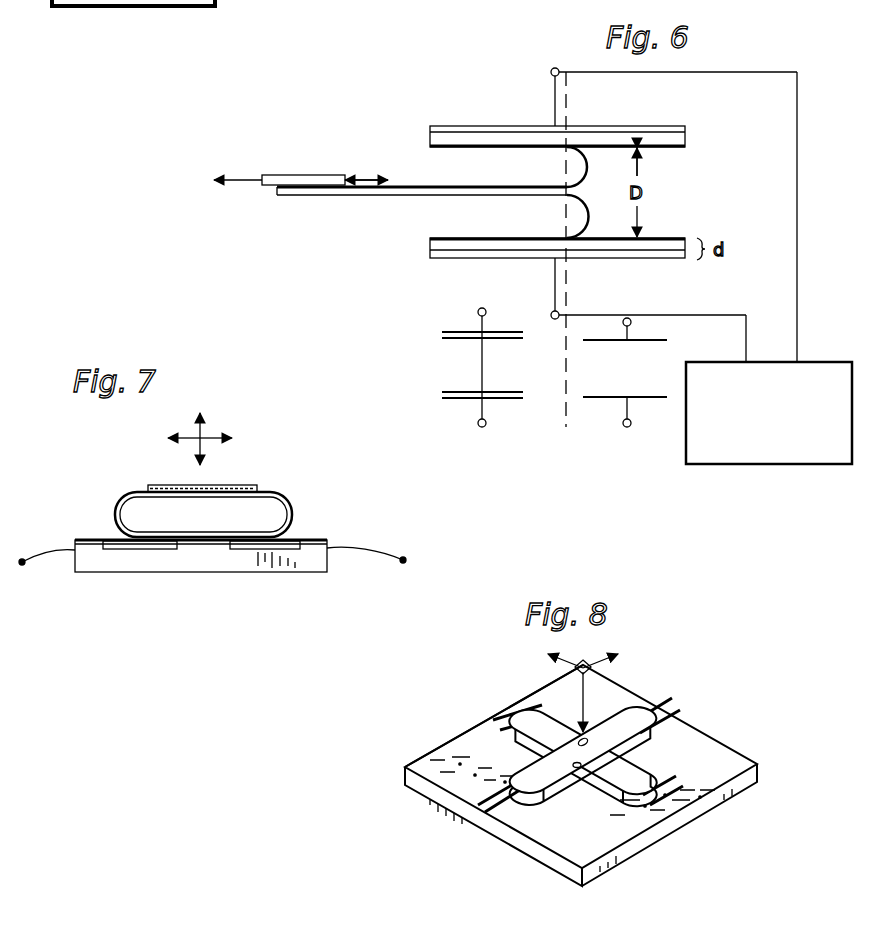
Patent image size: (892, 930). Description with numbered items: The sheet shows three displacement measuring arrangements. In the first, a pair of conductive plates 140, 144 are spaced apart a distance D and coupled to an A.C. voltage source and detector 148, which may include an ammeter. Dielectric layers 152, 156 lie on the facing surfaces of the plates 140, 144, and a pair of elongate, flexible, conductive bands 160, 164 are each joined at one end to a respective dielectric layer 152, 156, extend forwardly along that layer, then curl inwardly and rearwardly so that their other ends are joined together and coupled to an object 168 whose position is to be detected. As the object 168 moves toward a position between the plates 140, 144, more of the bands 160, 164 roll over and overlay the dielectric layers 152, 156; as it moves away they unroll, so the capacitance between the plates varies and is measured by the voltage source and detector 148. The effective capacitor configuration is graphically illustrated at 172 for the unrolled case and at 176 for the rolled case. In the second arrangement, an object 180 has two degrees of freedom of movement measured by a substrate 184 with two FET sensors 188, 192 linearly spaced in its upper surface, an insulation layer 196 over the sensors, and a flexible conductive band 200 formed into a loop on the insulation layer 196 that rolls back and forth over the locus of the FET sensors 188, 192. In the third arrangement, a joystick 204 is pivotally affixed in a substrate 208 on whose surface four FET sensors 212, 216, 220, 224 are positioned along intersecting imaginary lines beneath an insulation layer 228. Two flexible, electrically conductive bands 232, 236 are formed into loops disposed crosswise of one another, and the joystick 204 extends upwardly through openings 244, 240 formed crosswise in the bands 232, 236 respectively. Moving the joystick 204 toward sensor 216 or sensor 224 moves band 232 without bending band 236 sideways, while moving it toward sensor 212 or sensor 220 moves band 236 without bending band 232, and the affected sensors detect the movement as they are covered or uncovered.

In FIG. 6, the conductive plate 140 is at (474, 127).
In FIG. 6, the conductive plate 144 is at (457, 256).
In FIG. 6, the voltage source and detector 148 is at (762, 465).
In FIG. 6, the dielectric layer 152 is at (672, 141).
In FIG. 6, the dielectric layer 156 is at (676, 238).
In FIG. 6, the flexible conductive band 160 is at (578, 165).
In FIG. 6, the flexible conductive band 164 is at (570, 231).
In FIG. 6, the object 168 is at (300, 176).
In FIG. 6, the effective capacitor configuration 172 is at (612, 404).
In FIG. 6, the effective capacitor configuration 176 is at (458, 402).
In FIG. 7, the object 180 is at (246, 486).
In FIG. 7, the substrate 184 is at (318, 560).
In FIG. 7, the FET sensor 188 is at (128, 553).
In FIG. 7, the FET sensor 192 is at (247, 553).
In FIG. 7, the insulation layer 196 is at (90, 540).
In FIG. 7, the flexible conductive band 200 is at (293, 514).
In FIG. 8, the joystick 204 is at (598, 696).
In FIG. 8, the substrate 208 is at (700, 738).
In FIG. 8, the FET sensor 212 is at (670, 702).
In FIG. 8, the FET sensor 216 is at (498, 706).
In FIG. 8, the FET sensor 220 is at (480, 815).
In FIG. 8, the FET sensor 224 is at (688, 818).
In FIG. 8, the insulation layer 228 is at (742, 784).
In FIG. 8, the flexible conductive band 232 is at (650, 833).
In FIG. 8, the flexible conductive band 236 is at (445, 793).
In FIG. 8, the opening 240 is at (640, 737).
In FIG. 8, the opening 244 is at (512, 768).